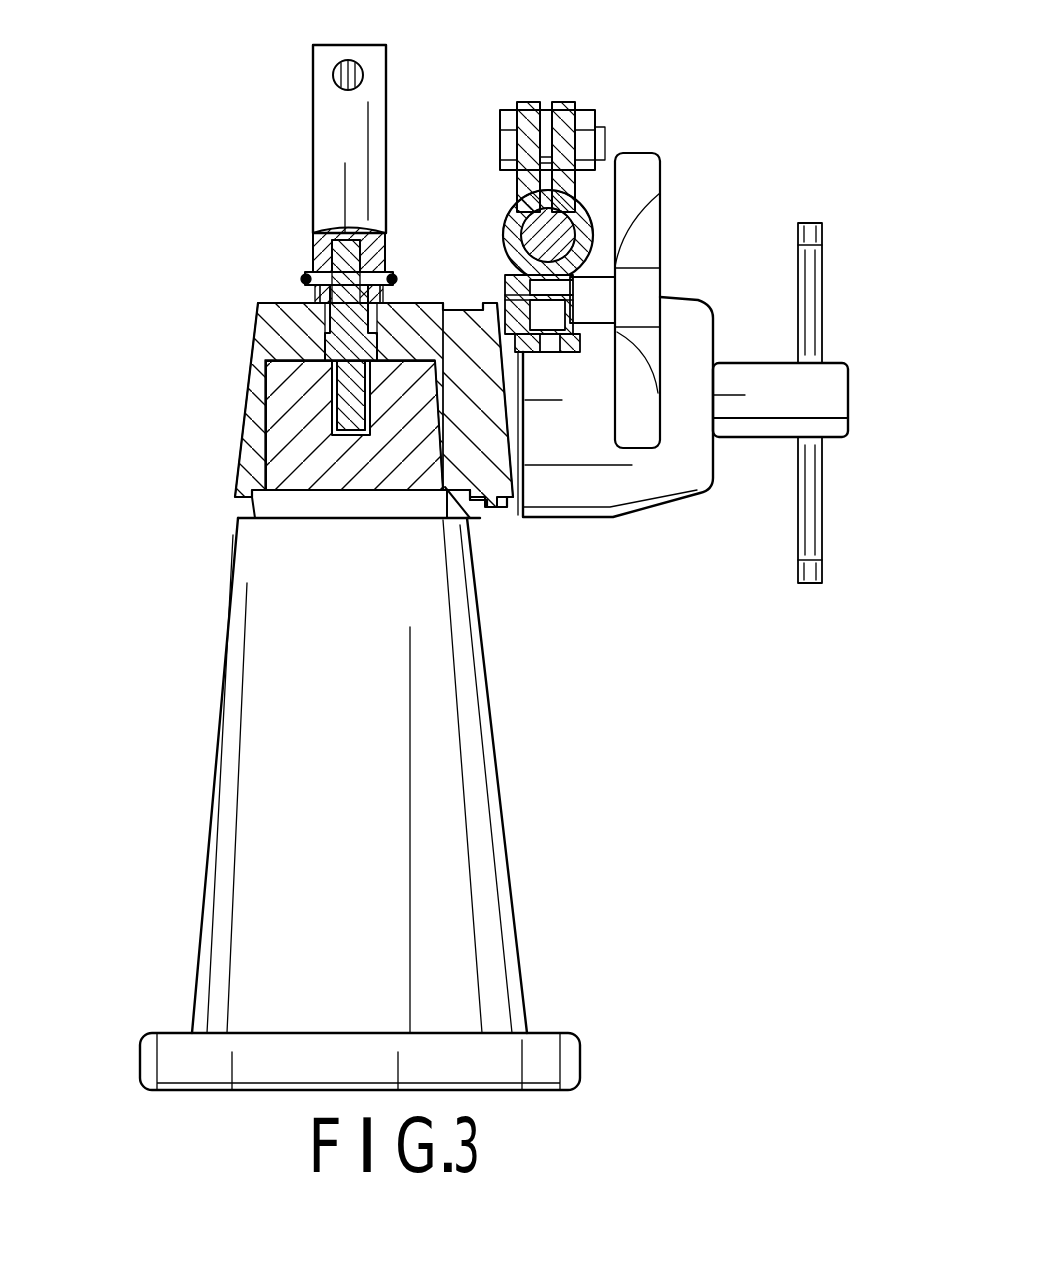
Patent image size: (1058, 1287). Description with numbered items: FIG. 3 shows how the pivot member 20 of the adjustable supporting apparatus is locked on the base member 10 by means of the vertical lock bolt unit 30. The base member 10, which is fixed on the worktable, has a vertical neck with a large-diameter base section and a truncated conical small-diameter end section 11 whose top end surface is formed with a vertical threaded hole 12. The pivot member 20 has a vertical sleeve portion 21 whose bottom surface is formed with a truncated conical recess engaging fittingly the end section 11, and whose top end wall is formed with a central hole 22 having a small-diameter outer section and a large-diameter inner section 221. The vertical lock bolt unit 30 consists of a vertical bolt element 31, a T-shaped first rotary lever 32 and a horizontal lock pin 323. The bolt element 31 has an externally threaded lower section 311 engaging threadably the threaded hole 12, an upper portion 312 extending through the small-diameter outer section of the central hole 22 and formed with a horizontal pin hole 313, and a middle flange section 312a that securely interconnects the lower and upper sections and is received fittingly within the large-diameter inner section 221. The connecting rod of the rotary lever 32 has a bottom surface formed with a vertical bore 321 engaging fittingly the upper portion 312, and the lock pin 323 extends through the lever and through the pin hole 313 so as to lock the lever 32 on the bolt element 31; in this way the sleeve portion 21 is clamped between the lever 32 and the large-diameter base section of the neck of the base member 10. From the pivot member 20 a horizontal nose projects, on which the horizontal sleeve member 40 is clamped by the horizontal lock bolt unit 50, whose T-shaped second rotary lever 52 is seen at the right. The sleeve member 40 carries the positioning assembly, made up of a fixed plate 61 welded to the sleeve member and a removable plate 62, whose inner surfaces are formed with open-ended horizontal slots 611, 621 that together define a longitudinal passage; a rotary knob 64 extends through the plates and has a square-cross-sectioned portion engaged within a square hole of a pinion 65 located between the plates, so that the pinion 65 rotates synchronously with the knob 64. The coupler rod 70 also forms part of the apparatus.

The base member 10 is at (492, 714).
The small-diameter end section 11 is at (345, 398).
The vertical threaded hole 12 is at (407, 507).
The pivot member 20 is at (246, 373).
The vertical sleeve portion 21 is at (300, 420).
The central hole 22 is at (310, 283).
The large-diameter inner section 221 is at (270, 303).
The vertical lock bolt unit 30 is at (213, 55).
The vertical bolt element 31 is at (307, 275).
The externally threaded lower section 311 is at (343, 395).
The upper portion 312 is at (373, 225).
The middle flange section 312a is at (211, 352).
The horizontal pin hole 313 is at (373, 263).
The T-shaped first rotary lever 32 is at (333, 60).
The vertical bore 321 is at (317, 233).
The horizontal lock pin 323 is at (397, 277).
The horizontal sleeve member 40 is at (688, 496).
The horizontal lock bolt unit 50 is at (833, 363).
The T-shaped second rotary lever 52 is at (765, 428).
The fixed plate 61 is at (527, 100).
The removable plate 62 is at (565, 97).
The open-ended horizontal slot 621 is at (577, 200).
The rotary knob 64 is at (600, 295).
The pinion 65 is at (562, 354).
The coupler rod 70 is at (527, 223).
The open-ended horizontal slot 611 is at (510, 210).